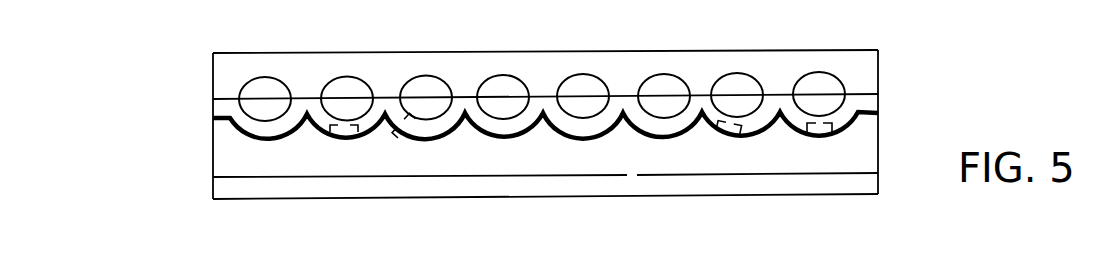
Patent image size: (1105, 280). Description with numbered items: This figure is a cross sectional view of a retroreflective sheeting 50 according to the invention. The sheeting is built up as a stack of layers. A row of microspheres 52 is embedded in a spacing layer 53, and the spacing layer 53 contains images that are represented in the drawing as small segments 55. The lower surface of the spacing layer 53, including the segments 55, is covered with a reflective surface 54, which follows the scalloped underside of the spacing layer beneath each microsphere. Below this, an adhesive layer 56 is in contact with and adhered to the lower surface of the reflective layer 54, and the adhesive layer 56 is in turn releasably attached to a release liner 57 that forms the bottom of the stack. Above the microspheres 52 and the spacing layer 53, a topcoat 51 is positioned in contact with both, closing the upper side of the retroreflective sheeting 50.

The retroreflective sheeting 50 is at (841, 27).
The topcoat 51 is at (870, 72).
The microspheres 52 is at (835, 88).
The spacing layer 53 is at (865, 103).
The reflective surface 54 is at (847, 127).
The segments 55 is at (818, 132).
The adhesive layer 56 is at (757, 157).
The release liner 57 is at (708, 182).